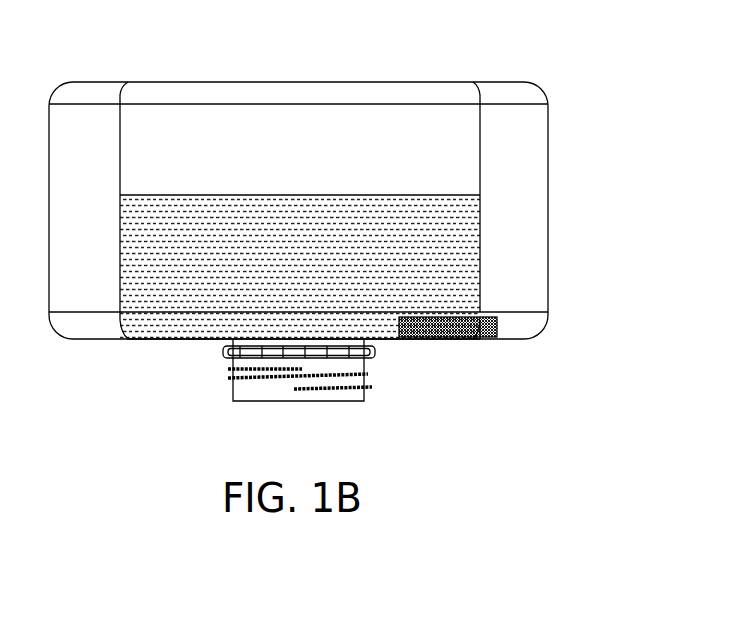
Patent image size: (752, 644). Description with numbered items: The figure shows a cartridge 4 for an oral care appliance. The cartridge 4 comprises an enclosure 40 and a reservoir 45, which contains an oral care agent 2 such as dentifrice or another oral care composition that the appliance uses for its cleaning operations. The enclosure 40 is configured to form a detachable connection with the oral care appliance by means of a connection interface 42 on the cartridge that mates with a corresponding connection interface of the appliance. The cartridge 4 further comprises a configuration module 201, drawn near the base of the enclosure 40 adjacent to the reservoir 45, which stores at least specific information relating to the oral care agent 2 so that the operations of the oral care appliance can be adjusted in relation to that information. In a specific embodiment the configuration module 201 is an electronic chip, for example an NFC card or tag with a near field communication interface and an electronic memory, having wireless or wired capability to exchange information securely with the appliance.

The cartridge 4 is at (546, 40).
The enclosure 40 is at (548, 157).
The oral care agent 2 is at (460, 223).
The reservoir 45 is at (480, 265).
The configuration module 201 is at (478, 337).
The connection interface 42 is at (366, 383).